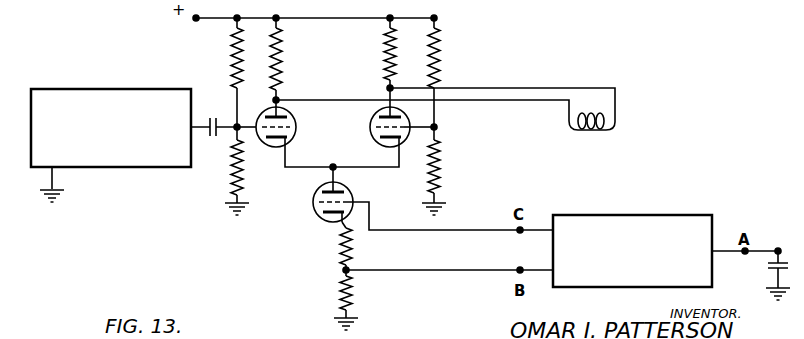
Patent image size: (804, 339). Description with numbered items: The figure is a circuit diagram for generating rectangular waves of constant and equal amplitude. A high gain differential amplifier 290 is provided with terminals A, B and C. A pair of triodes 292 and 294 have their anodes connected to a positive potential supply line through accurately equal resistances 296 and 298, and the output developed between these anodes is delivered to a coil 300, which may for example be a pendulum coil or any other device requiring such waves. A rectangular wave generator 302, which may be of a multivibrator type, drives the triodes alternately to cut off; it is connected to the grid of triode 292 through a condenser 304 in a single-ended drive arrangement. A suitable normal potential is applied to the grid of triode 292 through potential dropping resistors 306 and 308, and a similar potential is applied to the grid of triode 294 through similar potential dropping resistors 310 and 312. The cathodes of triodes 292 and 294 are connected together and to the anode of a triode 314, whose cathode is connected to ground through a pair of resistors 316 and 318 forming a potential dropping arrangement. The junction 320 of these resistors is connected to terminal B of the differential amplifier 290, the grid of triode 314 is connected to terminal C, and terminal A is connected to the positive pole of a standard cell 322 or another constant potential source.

The high gain differential amplifier 290 is at (630, 215).
The triode 292 is at (296, 132).
The triode 294 is at (409, 120).
The resistance 296 is at (282, 66).
The resistance 298 is at (384, 47).
The coil 300 is at (584, 129).
The rectangular wave generator 302 is at (96, 89).
The condenser 304 is at (209, 118).
The potential dropping resistor 306 is at (231, 63).
The potential dropping resistor 308 is at (231, 160).
The potential dropping resistor 310 is at (441, 64).
The potential dropping resistor 312 is at (441, 157).
The triode 314 is at (348, 188).
The resistor 316 is at (340, 248).
The resistor 318 is at (340, 292).
The junction 320 is at (343, 272).
The standard cell 322 is at (768, 261).